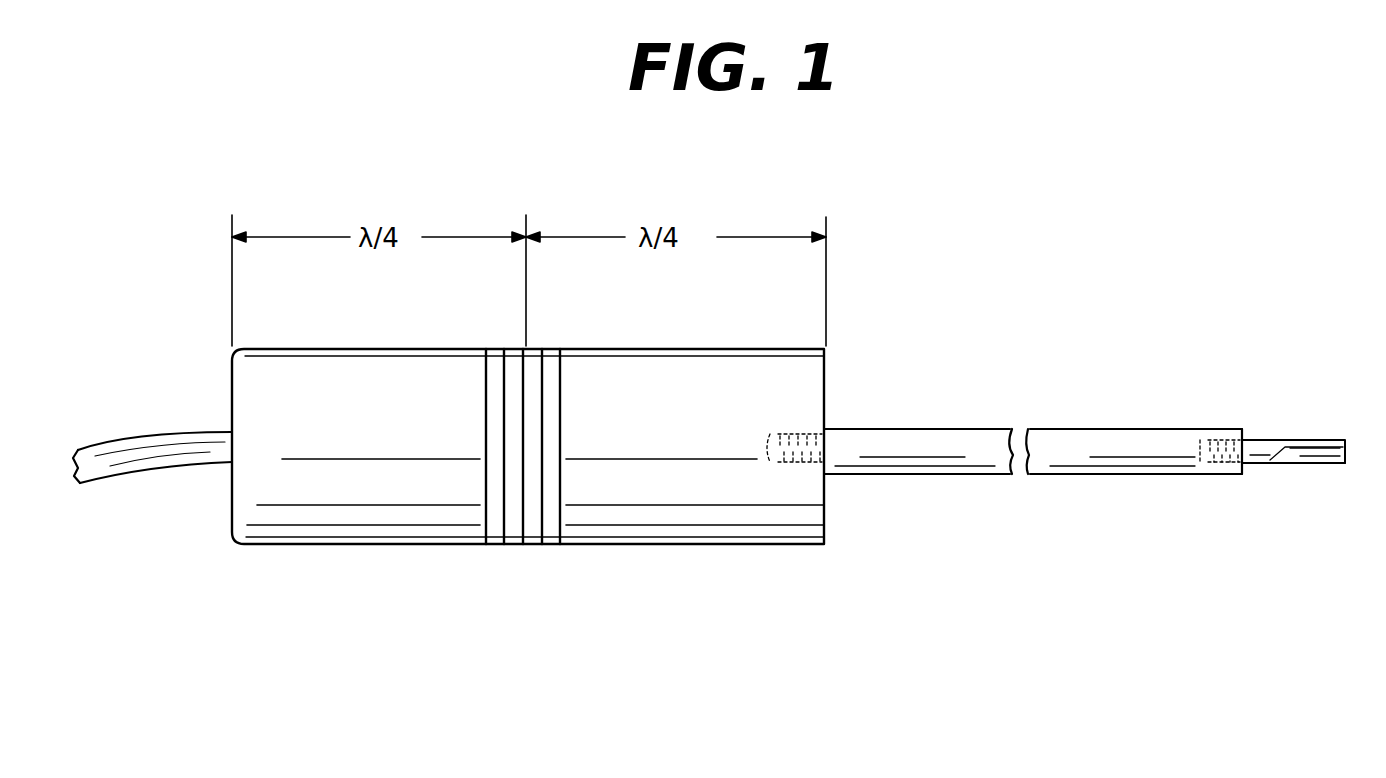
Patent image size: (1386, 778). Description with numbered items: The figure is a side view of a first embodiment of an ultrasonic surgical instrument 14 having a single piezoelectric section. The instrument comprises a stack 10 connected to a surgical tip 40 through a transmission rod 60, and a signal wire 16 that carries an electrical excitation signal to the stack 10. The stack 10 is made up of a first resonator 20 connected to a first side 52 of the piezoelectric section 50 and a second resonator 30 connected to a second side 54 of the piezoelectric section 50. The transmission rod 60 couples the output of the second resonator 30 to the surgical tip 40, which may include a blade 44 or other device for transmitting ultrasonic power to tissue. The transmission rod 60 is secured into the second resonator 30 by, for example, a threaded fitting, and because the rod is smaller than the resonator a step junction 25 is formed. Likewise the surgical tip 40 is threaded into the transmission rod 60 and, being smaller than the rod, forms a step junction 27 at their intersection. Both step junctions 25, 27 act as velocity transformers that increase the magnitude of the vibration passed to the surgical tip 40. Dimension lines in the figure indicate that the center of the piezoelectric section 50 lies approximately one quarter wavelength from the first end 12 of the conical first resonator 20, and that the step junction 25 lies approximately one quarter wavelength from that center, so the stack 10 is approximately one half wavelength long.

The stack 10 is at (518, 572).
The first end 12 is at (228, 374).
The ultrasonic surgical instrument 14 is at (360, 655).
The signal wire 16 is at (132, 430).
The first resonator 20 is at (372, 520).
The step junction 25 is at (828, 385).
The step junction 27 is at (1248, 475).
The second resonator 30 is at (752, 518).
The surgical tip 40 is at (1272, 446).
The blade 44 is at (1305, 465).
The piezoelectric section 50 is at (534, 349).
The first side 52 is at (482, 385).
The second side 54 is at (565, 385).
The transmission rod 60 is at (1082, 450).